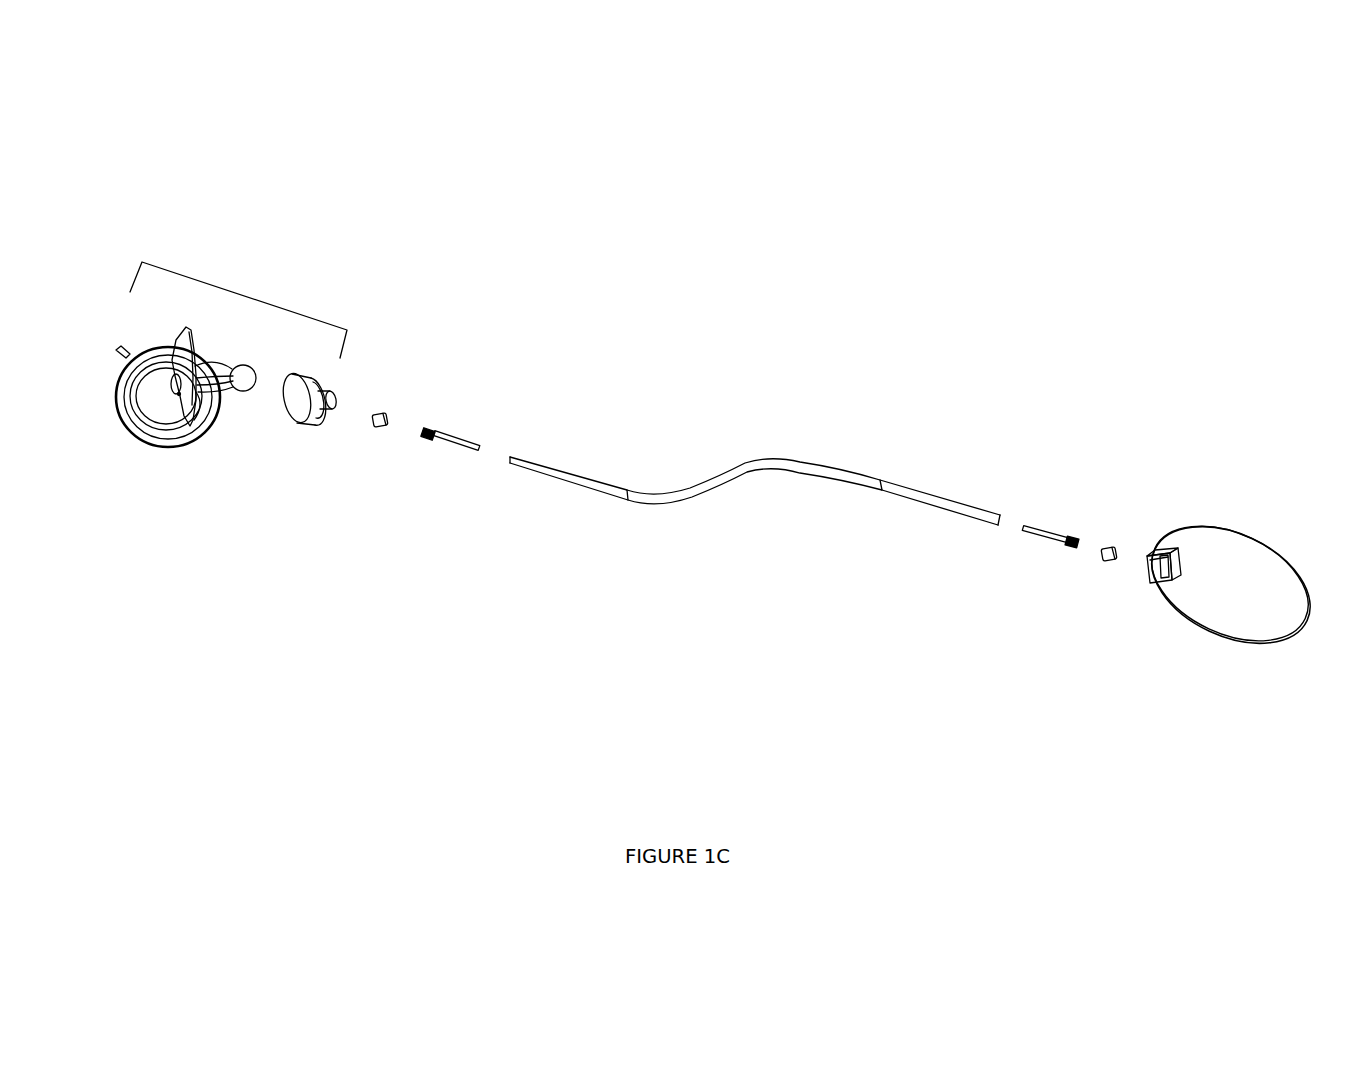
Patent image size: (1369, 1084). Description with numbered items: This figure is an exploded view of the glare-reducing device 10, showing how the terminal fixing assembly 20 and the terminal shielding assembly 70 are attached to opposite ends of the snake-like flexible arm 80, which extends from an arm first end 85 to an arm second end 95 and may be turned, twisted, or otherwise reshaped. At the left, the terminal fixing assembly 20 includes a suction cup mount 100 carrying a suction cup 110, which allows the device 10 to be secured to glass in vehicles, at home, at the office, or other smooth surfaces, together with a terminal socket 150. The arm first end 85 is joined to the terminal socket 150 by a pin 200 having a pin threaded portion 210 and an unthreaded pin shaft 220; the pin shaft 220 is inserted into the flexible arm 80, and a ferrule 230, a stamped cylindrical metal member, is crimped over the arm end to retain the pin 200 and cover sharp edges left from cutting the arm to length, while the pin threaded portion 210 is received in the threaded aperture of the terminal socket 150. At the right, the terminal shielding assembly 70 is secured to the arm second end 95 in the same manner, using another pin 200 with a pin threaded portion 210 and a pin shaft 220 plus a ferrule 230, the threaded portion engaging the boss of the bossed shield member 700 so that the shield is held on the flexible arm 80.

The device for reducing glare 10 is at (764, 216).
The terminal fixing assembly 20 is at (250, 295).
The suction cup mount 100 is at (154, 473).
The suction cup 110 is at (125, 400).
The terminal socket 150 is at (288, 468).
The ferrule 230 is at (375, 428).
The pin 200 is at (434, 508).
The pin threaded portion 210 is at (428, 430).
The pin shaft 220 is at (467, 438).
The flexible arm 80 is at (728, 485).
The arm first end 85 is at (517, 455).
The arm second end 95 is at (1007, 510).
The terminal shielding assembly 70 is at (1271, 493).
The bossed shield member 700 is at (1198, 625).